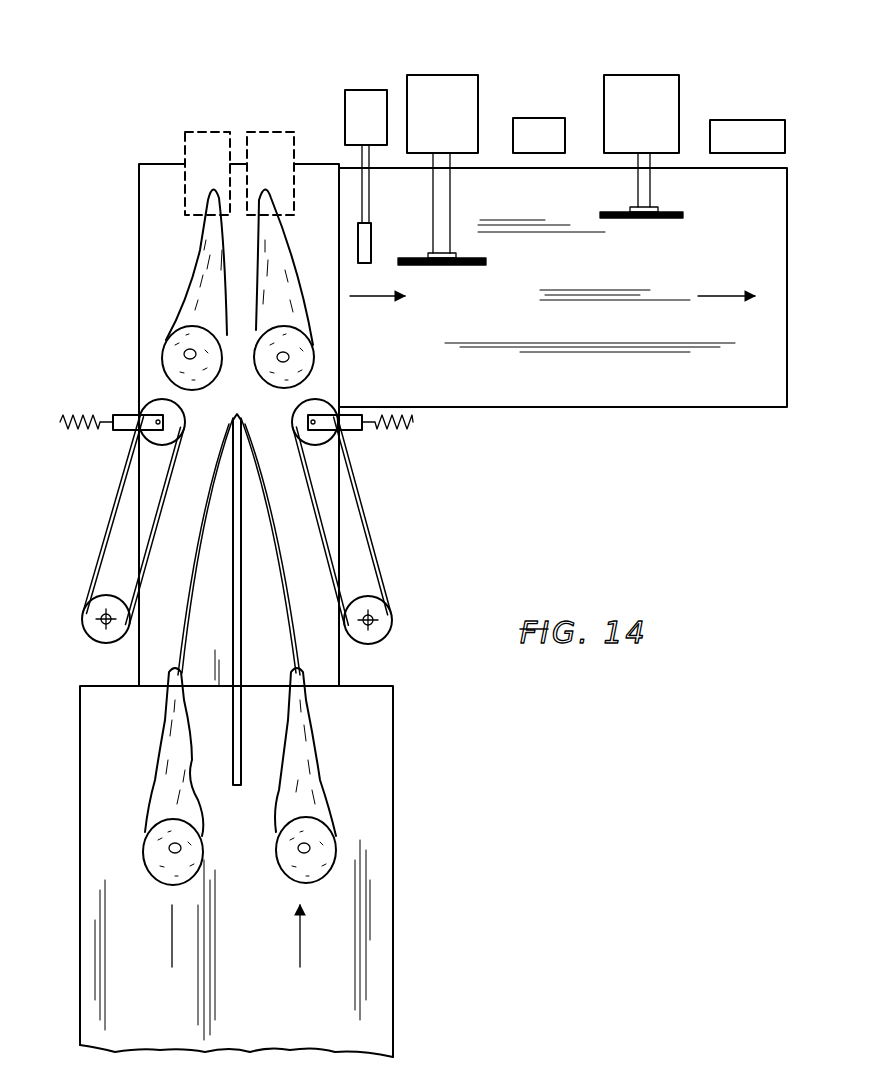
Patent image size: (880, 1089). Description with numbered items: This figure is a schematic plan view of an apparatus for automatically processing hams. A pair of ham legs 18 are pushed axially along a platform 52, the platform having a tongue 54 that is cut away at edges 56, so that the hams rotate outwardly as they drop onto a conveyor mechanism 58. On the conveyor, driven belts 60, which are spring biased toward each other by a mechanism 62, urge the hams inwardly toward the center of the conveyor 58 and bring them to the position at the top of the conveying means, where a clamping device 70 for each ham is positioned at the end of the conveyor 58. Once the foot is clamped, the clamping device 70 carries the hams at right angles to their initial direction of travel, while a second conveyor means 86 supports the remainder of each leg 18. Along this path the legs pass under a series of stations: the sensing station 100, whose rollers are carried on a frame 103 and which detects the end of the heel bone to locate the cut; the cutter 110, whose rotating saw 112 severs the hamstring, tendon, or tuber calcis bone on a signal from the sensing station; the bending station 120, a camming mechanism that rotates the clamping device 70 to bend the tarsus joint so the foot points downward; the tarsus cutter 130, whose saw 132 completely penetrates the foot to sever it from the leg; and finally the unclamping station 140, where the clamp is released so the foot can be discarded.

The ham legs 18 is at (138, 840).
The platform 52 is at (393, 938).
The tongue 54 is at (215, 548).
The edges 56 is at (215, 468).
The conveyor mechanism 58 is at (333, 350).
The driven belts 60 is at (100, 548).
The spring biasing mechanism 62 is at (72, 425).
The clamping device 70 is at (212, 128).
The second conveyor means 86 is at (517, 390).
The sensing station 100 is at (365, 86).
The frame 103 is at (372, 240).
The cutter 110 is at (478, 75).
The rotating saw 112 is at (465, 265).
The bending station 120 is at (545, 116).
The tarsus cutter 130 is at (635, 75).
The saw 132 is at (655, 218).
The unclamping station 140 is at (722, 118).